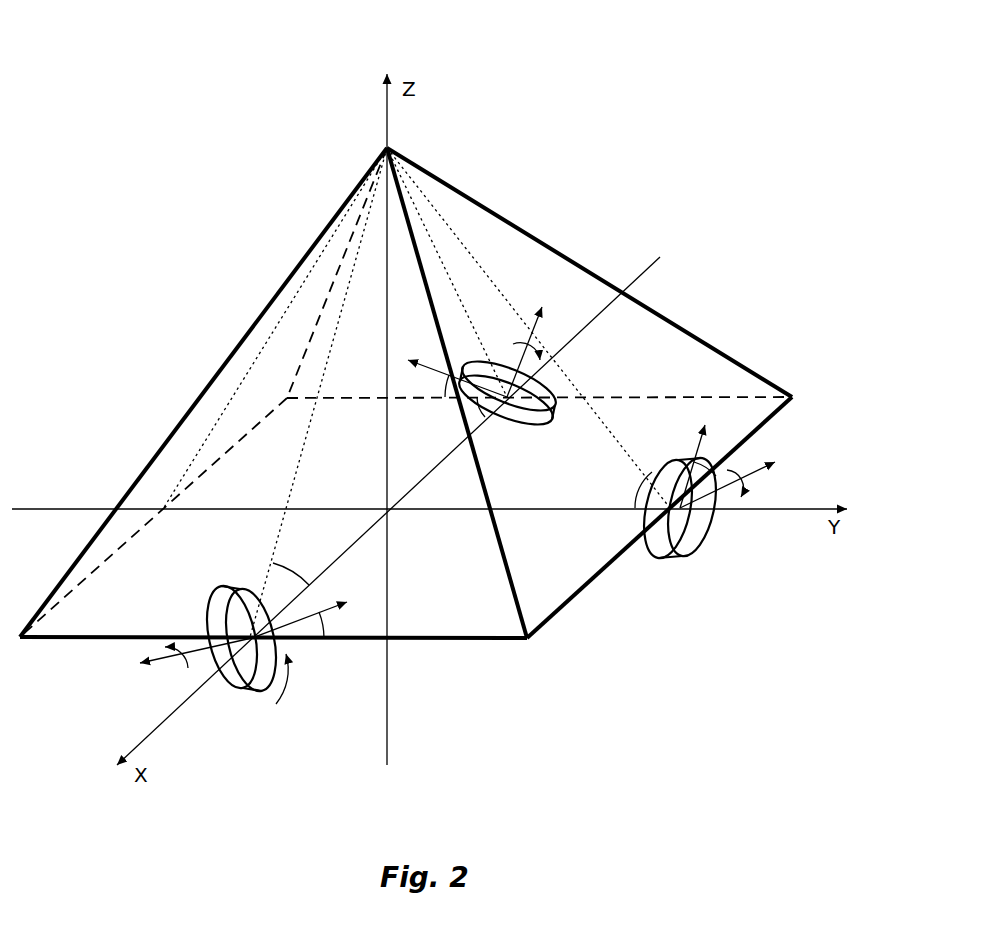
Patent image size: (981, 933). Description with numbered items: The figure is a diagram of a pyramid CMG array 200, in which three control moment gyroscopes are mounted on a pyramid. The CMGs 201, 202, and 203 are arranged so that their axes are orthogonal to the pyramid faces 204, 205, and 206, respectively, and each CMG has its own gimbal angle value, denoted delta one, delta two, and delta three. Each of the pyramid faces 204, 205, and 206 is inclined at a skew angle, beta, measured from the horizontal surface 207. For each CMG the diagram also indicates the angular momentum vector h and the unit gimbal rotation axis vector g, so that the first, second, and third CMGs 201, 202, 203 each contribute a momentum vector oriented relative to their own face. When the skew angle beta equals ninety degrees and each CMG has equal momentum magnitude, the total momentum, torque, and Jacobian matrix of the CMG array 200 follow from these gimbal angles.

The pyramid CMG array 200 is at (160, 120).
The first CMG 201 is at (262, 690).
The second CMG 202 is at (695, 545).
The third CMG 203 is at (525, 425).
The pyramid face 204 is at (438, 623).
The pyramid face 205 is at (592, 557).
The pyramid face 206 is at (659, 349).
The horizontal surface 207 is at (553, 620).